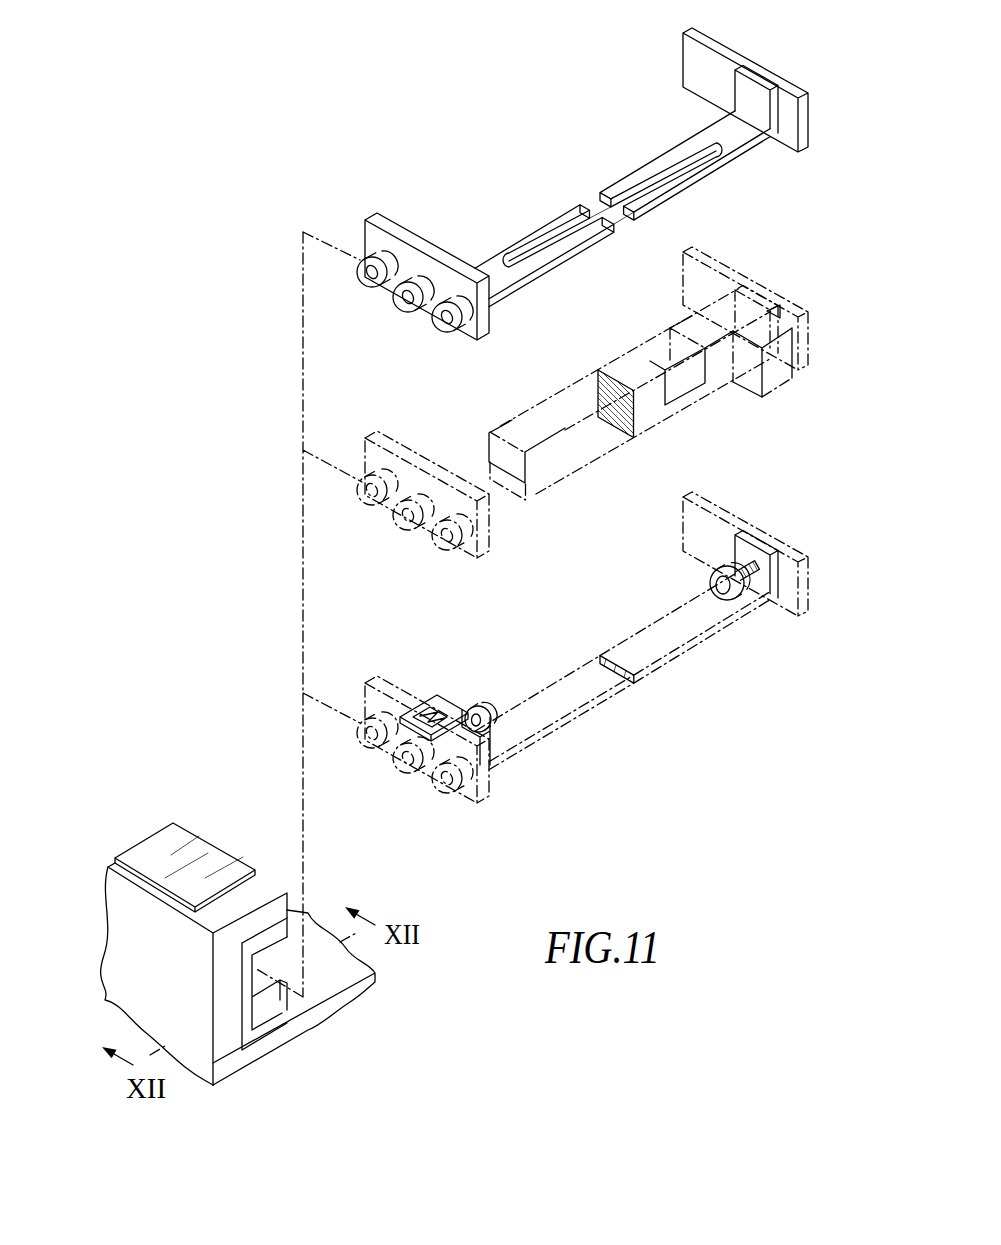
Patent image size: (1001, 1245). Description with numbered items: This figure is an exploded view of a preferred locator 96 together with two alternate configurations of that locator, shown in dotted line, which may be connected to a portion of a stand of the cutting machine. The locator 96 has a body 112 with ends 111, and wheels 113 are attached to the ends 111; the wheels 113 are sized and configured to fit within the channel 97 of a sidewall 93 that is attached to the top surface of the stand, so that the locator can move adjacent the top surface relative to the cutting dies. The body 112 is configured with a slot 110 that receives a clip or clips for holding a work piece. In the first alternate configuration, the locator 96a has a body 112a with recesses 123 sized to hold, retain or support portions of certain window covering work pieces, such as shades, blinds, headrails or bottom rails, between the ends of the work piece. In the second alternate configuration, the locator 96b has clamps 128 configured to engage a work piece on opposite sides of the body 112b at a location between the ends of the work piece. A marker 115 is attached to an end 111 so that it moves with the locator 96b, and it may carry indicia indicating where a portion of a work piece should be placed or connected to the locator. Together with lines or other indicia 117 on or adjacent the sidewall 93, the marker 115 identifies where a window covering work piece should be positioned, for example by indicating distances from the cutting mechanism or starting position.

The locator 96 is at (765, 50).
The locator 96a is at (764, 262).
The locator 96b is at (768, 505).
The slot 110 is at (557, 242).
The ends 111 is at (805, 110).
The body 112 is at (618, 183).
The body 112a is at (537, 407).
The body 112b is at (632, 637).
The wheels 113 is at (451, 319).
The marker 115 is at (437, 710).
The recesses 123 is at (657, 355).
The clamps 128 is at (710, 573).
The sidewalls 93 is at (133, 897).
The indicia 117 is at (195, 847).
The channel 97 is at (263, 1018).